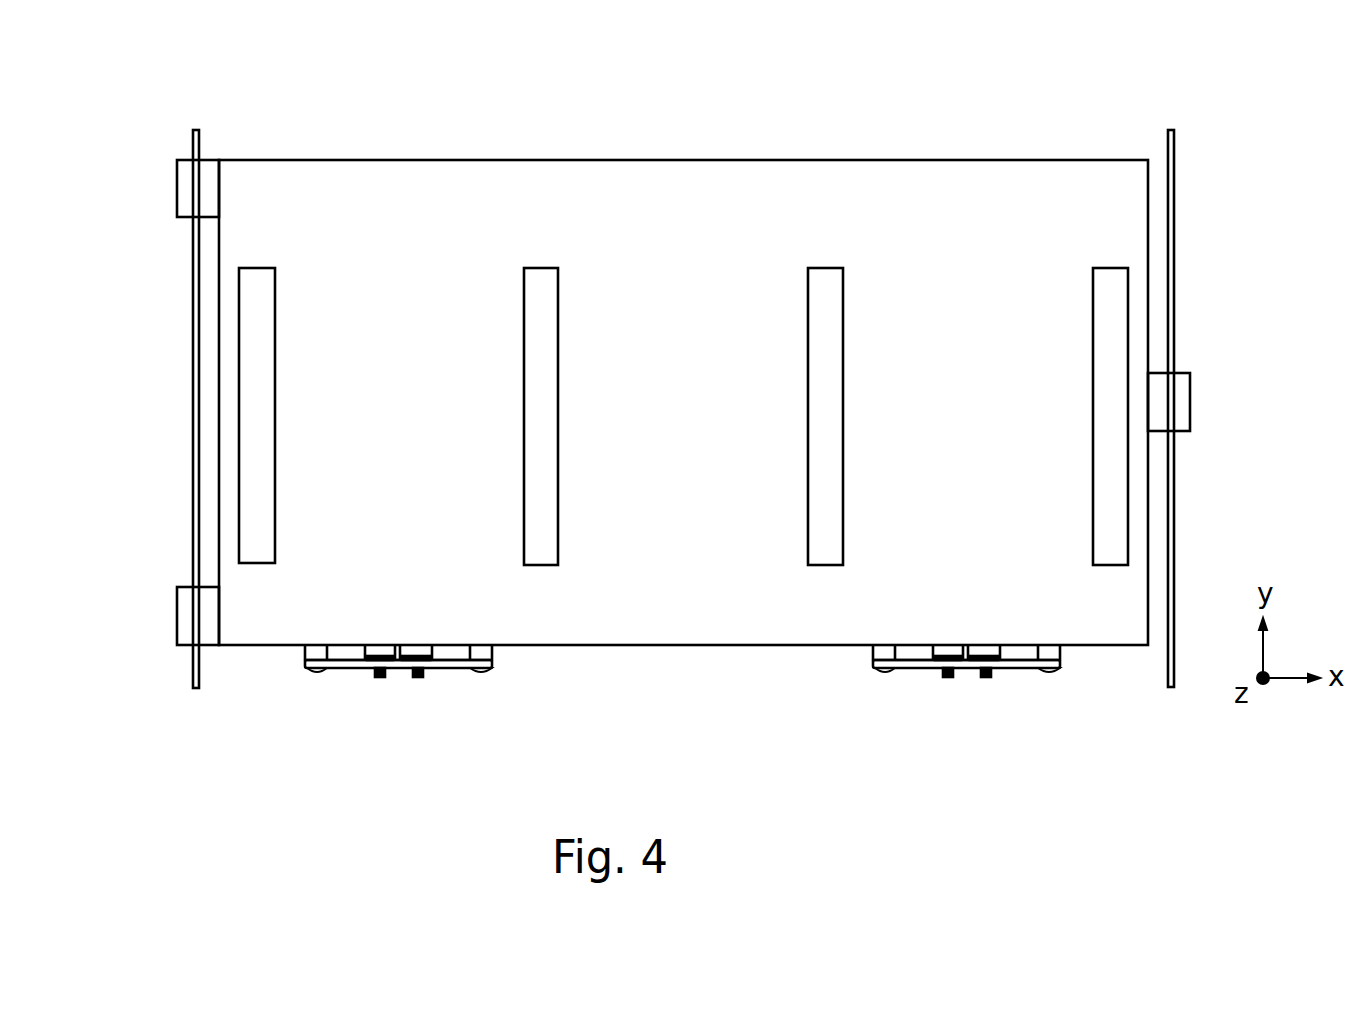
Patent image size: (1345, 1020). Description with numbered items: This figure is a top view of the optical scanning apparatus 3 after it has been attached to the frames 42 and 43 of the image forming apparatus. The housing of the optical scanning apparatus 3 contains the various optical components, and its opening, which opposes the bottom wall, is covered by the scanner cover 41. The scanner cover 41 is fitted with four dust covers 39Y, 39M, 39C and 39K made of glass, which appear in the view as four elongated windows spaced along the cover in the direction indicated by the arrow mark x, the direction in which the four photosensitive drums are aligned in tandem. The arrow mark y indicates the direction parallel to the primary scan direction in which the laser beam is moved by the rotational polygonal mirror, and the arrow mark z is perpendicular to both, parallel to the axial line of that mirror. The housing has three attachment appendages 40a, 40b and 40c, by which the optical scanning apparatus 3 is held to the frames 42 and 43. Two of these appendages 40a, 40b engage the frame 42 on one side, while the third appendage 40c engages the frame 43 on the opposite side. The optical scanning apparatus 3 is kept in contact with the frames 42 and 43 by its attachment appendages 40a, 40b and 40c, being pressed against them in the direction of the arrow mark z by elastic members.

The optical scanning apparatus 3 is at (683, 343).
The dust cover 39Y is at (256, 268).
The dust cover 39M is at (540, 268).
The dust cover 39C is at (830, 268).
The dust cover 39K is at (1107, 268).
The scanner cover 41 is at (422, 207).
The attachment appendage 40a is at (177, 633).
The attachment appendage 40b is at (177, 182).
The attachment appendage 40c is at (1190, 412).
The frame 42 is at (193, 377).
The frame 43 is at (1175, 277).